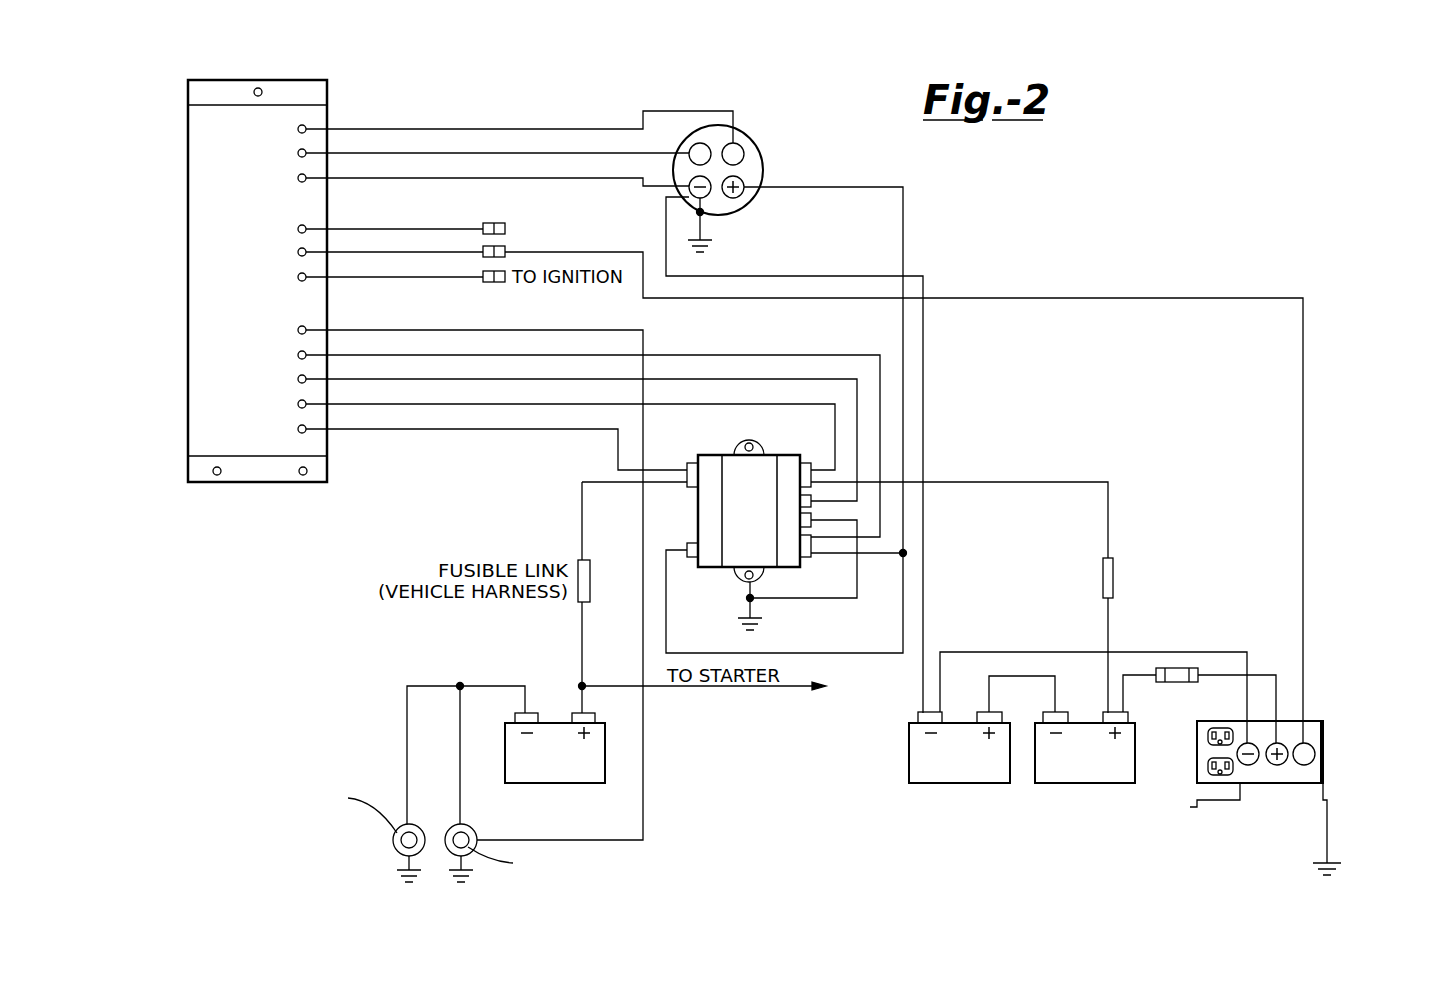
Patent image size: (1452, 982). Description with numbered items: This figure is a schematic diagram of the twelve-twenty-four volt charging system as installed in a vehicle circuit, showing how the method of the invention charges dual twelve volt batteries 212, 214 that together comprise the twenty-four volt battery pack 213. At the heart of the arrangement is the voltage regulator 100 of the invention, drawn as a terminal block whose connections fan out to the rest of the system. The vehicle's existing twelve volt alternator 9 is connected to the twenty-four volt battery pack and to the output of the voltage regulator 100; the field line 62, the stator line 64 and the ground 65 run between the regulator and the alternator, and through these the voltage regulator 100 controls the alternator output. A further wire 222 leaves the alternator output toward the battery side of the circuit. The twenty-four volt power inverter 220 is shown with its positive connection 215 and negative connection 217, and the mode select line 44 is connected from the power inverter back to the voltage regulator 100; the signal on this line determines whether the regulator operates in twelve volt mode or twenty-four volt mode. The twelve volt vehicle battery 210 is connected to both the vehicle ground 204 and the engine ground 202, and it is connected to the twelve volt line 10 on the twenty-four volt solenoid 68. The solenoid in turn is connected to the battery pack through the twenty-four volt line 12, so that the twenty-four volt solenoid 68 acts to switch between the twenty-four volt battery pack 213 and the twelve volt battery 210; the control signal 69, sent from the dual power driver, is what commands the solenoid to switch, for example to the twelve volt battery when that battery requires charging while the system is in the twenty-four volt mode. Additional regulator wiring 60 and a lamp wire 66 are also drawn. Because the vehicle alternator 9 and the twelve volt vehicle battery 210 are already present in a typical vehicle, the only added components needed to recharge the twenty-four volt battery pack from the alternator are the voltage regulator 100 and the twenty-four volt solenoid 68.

The 12 volt vehicle alternator 9 is at (743, 130).
The 12 volt line 10 is at (492, 429).
The 24 volt line 12 is at (693, 405).
The mode select line 44 is at (643, 278).
The armature wire 60 is at (815, 355).
The field line 62 is at (518, 128).
The stator line 64 is at (480, 153).
The ground 65 is at (443, 177).
The lamp wire 66 is at (460, 228).
The 24 volt solenoid 68 is at (698, 507).
The control signal 69 is at (767, 379).
The voltage regulator 100 is at (228, 483).
The engine ground 202 is at (393, 843).
The vehicle ground 204 is at (448, 832).
The 12 volt vehicle battery 210 is at (557, 717).
The 12 volt battery 212 is at (910, 745).
The 24 volt battery pack 213 is at (912, 830).
The 12 volt battery 214 is at (1080, 785).
The positive connection 215 is at (1265, 675).
The negative connection 217 is at (1156, 651).
The 24 volt power inverter 220 is at (1320, 721).
The alternator output wire 222 is at (903, 217).